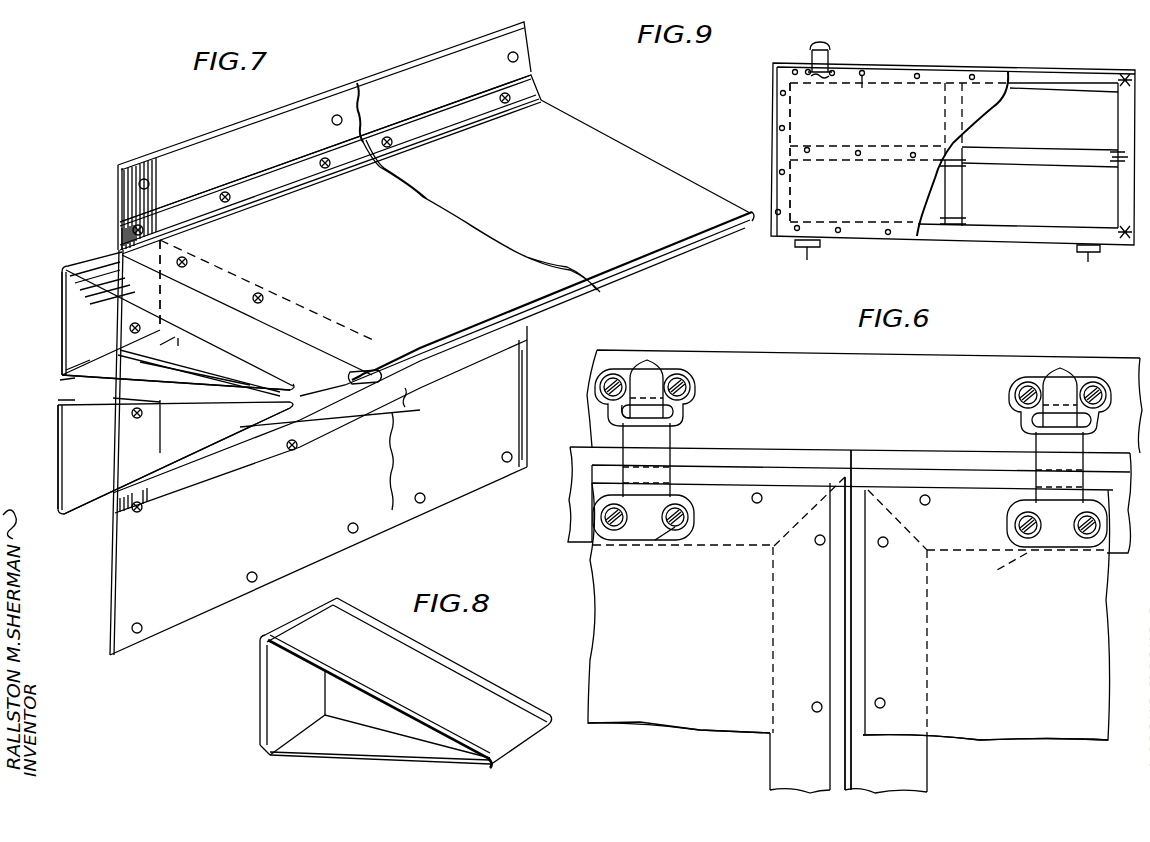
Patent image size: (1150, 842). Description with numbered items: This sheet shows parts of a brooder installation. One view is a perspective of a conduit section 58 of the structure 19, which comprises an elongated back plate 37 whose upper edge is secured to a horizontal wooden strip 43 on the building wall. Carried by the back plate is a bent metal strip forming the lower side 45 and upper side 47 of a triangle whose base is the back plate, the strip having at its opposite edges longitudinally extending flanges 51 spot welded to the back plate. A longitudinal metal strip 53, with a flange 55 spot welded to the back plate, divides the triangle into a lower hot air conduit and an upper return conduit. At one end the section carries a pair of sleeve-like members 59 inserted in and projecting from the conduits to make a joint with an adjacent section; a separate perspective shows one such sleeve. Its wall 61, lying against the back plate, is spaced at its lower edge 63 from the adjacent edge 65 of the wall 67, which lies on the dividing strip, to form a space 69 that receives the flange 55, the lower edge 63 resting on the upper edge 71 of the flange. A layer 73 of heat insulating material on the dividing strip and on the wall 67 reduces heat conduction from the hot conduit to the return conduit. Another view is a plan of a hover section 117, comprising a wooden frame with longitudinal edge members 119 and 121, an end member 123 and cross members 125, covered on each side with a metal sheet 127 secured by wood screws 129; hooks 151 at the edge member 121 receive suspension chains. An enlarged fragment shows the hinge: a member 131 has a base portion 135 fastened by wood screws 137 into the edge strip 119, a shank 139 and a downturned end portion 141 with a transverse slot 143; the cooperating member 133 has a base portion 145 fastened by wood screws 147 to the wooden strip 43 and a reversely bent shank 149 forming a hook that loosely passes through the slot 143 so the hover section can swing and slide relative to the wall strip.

In FIG. 7, the structure 19 is at (620, 172).
In FIG. 7, the back plate 37 is at (268, 112).
In FIG. 6, the wooden strip 43 is at (730, 351).
In FIG. 7, the lower side 45 is at (327, 417).
In FIG. 7, the upper side 47 is at (310, 342).
In FIG. 7, the flanges 51 is at (203, 195).
In FIG. 7, the metal strip 53 is at (378, 370).
In FIG. 7, the flange 55 is at (157, 353).
In FIG. 7, the section 58 is at (694, 180).
In FIG. 7, the sleeve-like members 59 is at (113, 266).
In FIG. 8, the sleeve-like members 59 is at (470, 690).
In FIG. 7, the wall 61 is at (60, 298).
In FIG. 8, the wall 61 is at (258, 689).
In FIG. 7, the lower edge 63 is at (82, 365).
In FIG. 8, the lower edge 63 is at (317, 701).
In FIG. 7, the edge 65 is at (110, 352).
In FIG. 8, the edge 65 is at (310, 733).
In FIG. 7, the wall 67 is at (107, 398).
In FIG. 8, the wall 67 is at (360, 766).
In FIG. 7, the space 69 is at (68, 378).
In FIG. 8, the space 69 is at (260, 752).
In FIG. 7, the upper edge 71 is at (172, 336).
In FIG. 7, the layer of heat insulating material 73 is at (205, 365).
In FIG. 9, the section 117 is at (770, 118).
In FIG. 6, the section 117 is at (628, 595).
In FIG. 9, the edge member 119 is at (1078, 86).
In FIG. 6, the edge member 119 is at (742, 547).
In FIG. 9, the edge member 121 is at (1041, 231).
In FIG. 9, the end member 123 is at (786, 208).
In FIG. 6, the end member 123 is at (913, 778).
In FIG. 9, the cross members 125 is at (1013, 165).
In FIG. 9, the metal sheet 127 is at (982, 125).
In FIG. 6, the metal sheet 127 is at (665, 725).
In FIG. 9, the wood screws 129 is at (786, 128).
In FIG. 6, the wood screws 129 is at (757, 504).
In FIG. 9, the member 131 is at (838, 56).
In FIG. 6, the member 131 is at (835, 433).
In FIG. 6, the member 133 is at (669, 371).
In FIG. 6, the base portion 135 is at (693, 515).
In FIG. 6, the wood screws 137 is at (678, 528).
In FIG. 6, the shank 139 is at (623, 453).
In FIG. 6, the downturned end portion 141 is at (684, 415).
In FIG. 6, the slot 143 is at (622, 412).
In FIG. 6, the base portion 145 is at (678, 376).
In FIG. 6, the wood screws 147 is at (614, 376).
In FIG. 6, the shank 149 is at (648, 364).
In FIG. 9, the hooks 151 is at (810, 254).